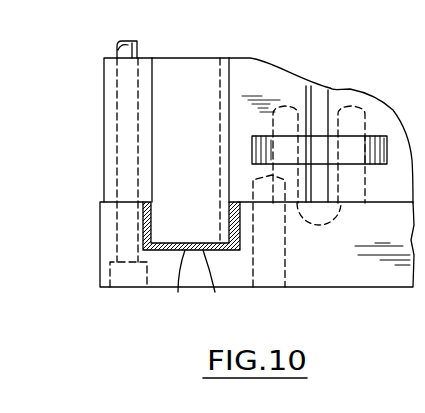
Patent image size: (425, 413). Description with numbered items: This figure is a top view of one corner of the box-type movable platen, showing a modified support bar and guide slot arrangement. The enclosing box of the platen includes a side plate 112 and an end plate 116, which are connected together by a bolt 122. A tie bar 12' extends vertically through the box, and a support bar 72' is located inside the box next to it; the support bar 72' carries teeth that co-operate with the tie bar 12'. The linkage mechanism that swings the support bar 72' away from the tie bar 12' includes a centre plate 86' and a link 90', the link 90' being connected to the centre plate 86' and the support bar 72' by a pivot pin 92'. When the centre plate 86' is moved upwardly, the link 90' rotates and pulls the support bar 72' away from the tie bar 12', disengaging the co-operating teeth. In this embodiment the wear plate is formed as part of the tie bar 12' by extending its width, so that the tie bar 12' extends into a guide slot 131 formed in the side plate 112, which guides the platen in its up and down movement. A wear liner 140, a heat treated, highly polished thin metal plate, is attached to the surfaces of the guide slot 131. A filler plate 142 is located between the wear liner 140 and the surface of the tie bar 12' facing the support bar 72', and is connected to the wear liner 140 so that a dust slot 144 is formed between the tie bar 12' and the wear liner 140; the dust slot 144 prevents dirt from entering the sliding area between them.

The side plate 112 is at (357, 288).
The end plate 116 is at (104, 78).
The bolt 122 is at (128, 279).
The tie bar 12' is at (241, 52).
The support bar 72' is at (285, 112).
The centre plate 86' is at (371, 128).
The link 90' is at (338, 188).
The pivot pin 92' is at (319, 225).
The dust slot 144 is at (236, 200).
The filler plate 142 is at (228, 222).
The guide slot 131 is at (178, 286).
The wear liner 140 is at (225, 286).